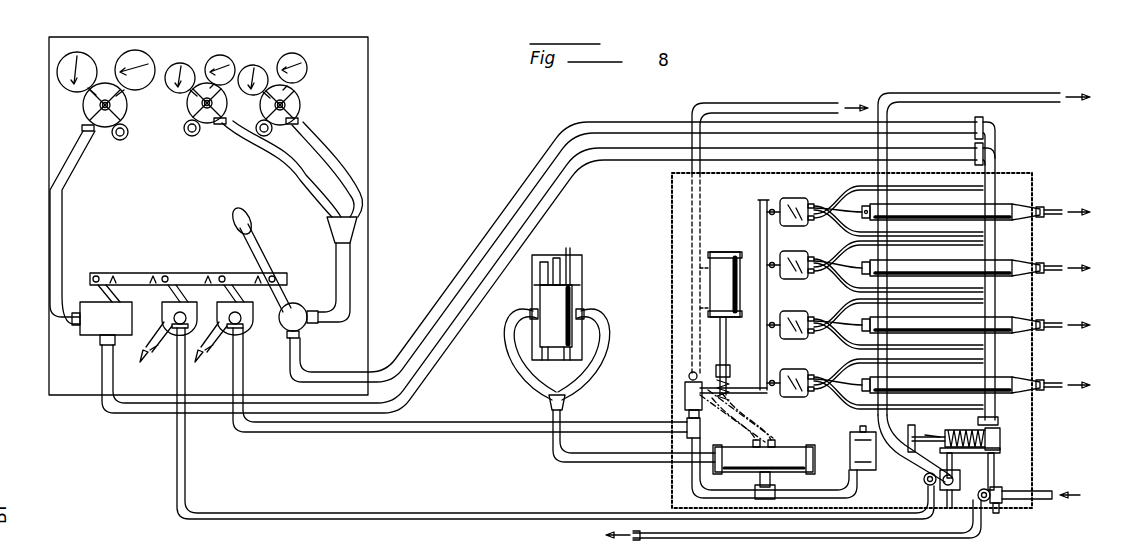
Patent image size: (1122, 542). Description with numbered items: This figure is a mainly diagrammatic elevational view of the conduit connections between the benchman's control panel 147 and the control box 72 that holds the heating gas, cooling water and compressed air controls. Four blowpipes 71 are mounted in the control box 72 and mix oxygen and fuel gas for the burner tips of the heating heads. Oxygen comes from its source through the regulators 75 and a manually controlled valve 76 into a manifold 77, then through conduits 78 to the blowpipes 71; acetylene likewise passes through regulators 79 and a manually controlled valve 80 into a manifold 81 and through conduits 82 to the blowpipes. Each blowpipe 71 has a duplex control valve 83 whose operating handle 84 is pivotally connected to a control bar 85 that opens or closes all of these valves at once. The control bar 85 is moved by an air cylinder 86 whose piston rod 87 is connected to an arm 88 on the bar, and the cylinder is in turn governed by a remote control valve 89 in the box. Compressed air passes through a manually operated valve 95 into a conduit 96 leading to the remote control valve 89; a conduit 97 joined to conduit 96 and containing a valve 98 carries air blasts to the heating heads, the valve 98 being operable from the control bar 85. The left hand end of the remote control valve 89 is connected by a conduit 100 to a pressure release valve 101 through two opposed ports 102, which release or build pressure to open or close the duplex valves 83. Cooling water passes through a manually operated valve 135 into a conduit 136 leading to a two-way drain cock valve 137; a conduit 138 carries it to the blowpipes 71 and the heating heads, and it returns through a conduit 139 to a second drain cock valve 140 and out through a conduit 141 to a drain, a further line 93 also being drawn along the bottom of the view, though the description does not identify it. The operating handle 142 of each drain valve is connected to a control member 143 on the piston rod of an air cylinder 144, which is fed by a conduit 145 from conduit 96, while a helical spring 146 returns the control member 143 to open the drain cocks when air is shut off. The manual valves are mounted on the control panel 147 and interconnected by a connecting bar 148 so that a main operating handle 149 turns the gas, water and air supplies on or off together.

The blowpipe 71 is at (1025, 262).
The control box 72 is at (672, 200).
The oxygen regulators 75 is at (103, 92).
The manually controlled valve 76 is at (84, 326).
The oxygen manifold 77 is at (158, 414).
The oxygen conduits 78 is at (872, 190).
The acetylene regulators 79 is at (272, 90).
The manually controlled valve 80 is at (302, 326).
The acetylene manifold 81 is at (513, 183).
The acetylene conduits 82 is at (875, 233).
The duplex control valve 83 is at (790, 226).
The operating handle 84 is at (784, 280).
The control bar 85 is at (760, 212).
The air cylinder 86 is at (740, 252).
The piston rod 87 is at (731, 336).
The arm 88 is at (752, 372).
The remote control valve 89 is at (778, 446).
The pipe 93 is at (528, 540).
The manually operated air valve 95 is at (243, 333).
The air conduit 96 is at (385, 428).
The air conduit 97 is at (768, 104).
The air valve 98 is at (688, 390).
The conduit 100 is at (553, 452).
The pressure release valve 101 is at (582, 287).
The ports 102 is at (532, 313).
The manually operated water valve 135 is at (160, 333).
The water conduit 136 is at (496, 514).
The two-way drain cock valve 137 is at (926, 482).
The water conduit 138 is at (1012, 94).
The return water conduit 139 is at (1040, 500).
The second two-way drain cock valve 140 is at (1000, 505).
The drain conduit 141 is at (650, 530).
The operating handle 142 is at (995, 472).
The control member 143 is at (1000, 449).
The air cylinder 144 is at (878, 448).
The conduit 145 is at (798, 490).
The helical spring 146 is at (960, 428).
The control panel 147 is at (343, 46).
The connecting bar 148 is at (118, 272).
The main operating handle 149 is at (252, 250).